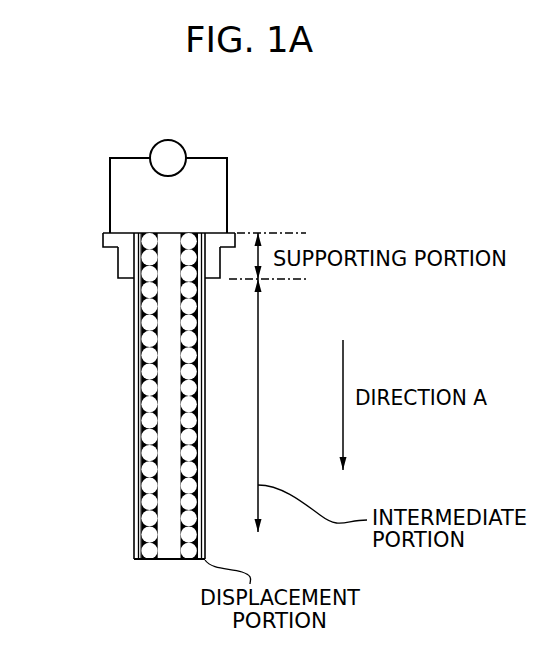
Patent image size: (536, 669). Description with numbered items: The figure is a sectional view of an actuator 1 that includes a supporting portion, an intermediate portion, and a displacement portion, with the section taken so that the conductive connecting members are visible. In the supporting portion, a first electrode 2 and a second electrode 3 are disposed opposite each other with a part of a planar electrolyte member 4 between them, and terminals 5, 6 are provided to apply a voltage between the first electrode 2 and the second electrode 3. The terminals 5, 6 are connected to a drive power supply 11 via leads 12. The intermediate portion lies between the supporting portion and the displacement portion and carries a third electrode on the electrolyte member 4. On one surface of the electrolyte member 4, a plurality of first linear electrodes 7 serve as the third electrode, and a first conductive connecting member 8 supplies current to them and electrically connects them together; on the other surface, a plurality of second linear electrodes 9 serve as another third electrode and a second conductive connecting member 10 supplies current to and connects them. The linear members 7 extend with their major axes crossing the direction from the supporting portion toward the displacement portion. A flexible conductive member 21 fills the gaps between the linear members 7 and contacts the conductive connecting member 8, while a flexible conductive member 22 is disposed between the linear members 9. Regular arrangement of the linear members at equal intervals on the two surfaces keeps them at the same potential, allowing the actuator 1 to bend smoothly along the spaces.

The actuator 1 is at (107, 322).
The first electrode 2 is at (127, 233).
The second electrode 3 is at (212, 233).
The electrolyte member 4 is at (168, 559).
The terminal 5 is at (110, 248).
The terminal 6 is at (233, 233).
The linear members 7 is at (145, 428).
The conductive connecting member 8 is at (134, 377).
The second linear electrodes 9 is at (188, 392).
The second conductive connecting member 10 is at (204, 452).
The drive power supply 11 is at (176, 140).
The leads 12 is at (128, 158).
The flexible conductive member 21 is at (134, 518).
The flexible conductive member 22 is at (198, 515).